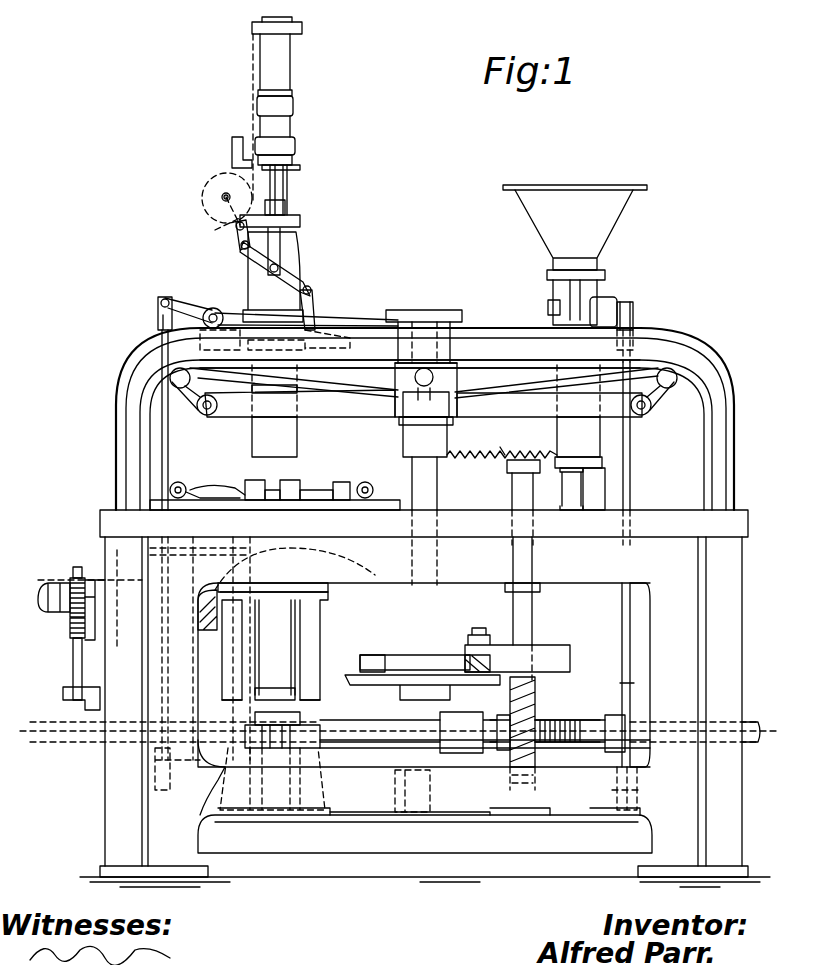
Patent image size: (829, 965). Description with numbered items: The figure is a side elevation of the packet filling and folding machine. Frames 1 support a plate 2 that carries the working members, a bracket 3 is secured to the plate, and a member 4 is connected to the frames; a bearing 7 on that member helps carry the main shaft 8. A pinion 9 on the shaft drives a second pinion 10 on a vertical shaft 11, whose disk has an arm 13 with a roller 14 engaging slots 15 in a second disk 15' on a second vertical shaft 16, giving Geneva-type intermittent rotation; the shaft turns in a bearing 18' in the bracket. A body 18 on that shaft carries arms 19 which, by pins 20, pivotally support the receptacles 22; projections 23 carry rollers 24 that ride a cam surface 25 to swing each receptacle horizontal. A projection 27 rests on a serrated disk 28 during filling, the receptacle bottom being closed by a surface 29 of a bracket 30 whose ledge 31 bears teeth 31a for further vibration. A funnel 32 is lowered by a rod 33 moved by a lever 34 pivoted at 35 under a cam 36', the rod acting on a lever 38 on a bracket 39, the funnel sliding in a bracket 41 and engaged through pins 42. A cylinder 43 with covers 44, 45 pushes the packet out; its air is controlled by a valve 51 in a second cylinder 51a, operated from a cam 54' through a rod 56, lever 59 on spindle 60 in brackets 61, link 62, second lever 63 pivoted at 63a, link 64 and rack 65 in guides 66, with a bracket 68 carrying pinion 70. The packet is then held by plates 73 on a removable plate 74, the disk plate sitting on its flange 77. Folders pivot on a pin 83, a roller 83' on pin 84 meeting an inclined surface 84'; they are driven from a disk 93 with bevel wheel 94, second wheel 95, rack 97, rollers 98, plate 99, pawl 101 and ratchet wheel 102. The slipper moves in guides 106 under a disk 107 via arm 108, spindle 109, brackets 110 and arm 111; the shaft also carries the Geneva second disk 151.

The frames 1 is at (425, 712).
The plate 2 is at (424, 523).
The bracket 3 is at (437, 419).
The member 4 is at (425, 830).
The bearing 7 is at (452, 762).
The shaft 8 is at (400, 731).
The pinion 9 is at (536, 706).
The second pinion 10 is at (560, 724).
The vertical shaft 11 is at (525, 629).
The arm 13 is at (500, 646).
The roller 14 is at (477, 662).
The recesses or slots 15 is at (372, 662).
The second disk 15' is at (422, 688).
The second vertical shaft 16 is at (424, 521).
The body 18 is at (424, 353).
The bearing 18' is at (402, 432).
The arms 19 is at (300, 403).
The pins 20 is at (457, 405).
The receptacles 22 is at (427, 416).
The projections 23 is at (415, 385).
The rollers 24 is at (170, 378).
The cam surface 25 is at (270, 388).
The projection 27 is at (546, 455).
The serrated disk 28 is at (510, 466).
The surface 29 is at (599, 489).
The bracket 30 is at (567, 489).
The ledge or wall 31 is at (502, 466).
The teeth or serrations 31a is at (505, 441).
The funnel 32 is at (575, 227).
The rod 33 is at (630, 492).
The lever 34 is at (688, 766).
The pivot 35 is at (620, 800).
The cam 36' is at (642, 675).
The lever 38 is at (548, 310).
The bracket 39 is at (603, 312).
The bracket 41 is at (595, 290).
The pins 42 is at (548, 303).
The cylinder 43 is at (272, 117).
The cover 44 is at (302, 28).
The second cover 45 is at (300, 221).
The valve 51 is at (273, 277).
The second cylinder 51a is at (275, 130).
The cam 54' is at (176, 774).
The rod 56 is at (166, 455).
The lever 59 is at (196, 298).
The spindle 60 is at (214, 308).
The brackets 61 is at (285, 331).
The link 62 is at (282, 178).
The second lever 63 is at (290, 272).
The pivot 63a is at (278, 268).
The link 64 is at (236, 240).
The toothed rack 65 is at (213, 223).
The guides 66 is at (232, 160).
The bracket 68 is at (222, 200).
The pinion 70 is at (202, 192).
The plates 73 is at (275, 647).
The plate 74 is at (268, 690).
The peripheral flange 77 is at (410, 828).
The pin 83 is at (215, 480).
The roller 83' is at (287, 480).
The pin 84 is at (275, 486).
The inclined surface 84' is at (262, 481).
The disk 93 is at (368, 555).
The bevel wheel 94 is at (330, 592).
The second wheel 95 is at (210, 614).
The rack 97 is at (72, 660).
The rollers 98 is at (70, 645).
The plate 99 is at (97, 580).
The pawl 101 is at (68, 628).
The ratchet wheel 102 is at (62, 582).
The guides 106 is at (310, 637).
The disk 107 is at (212, 770).
The arm 108 is at (215, 790).
The spindle 109 is at (300, 752).
The brackets 110 is at (300, 724).
The arm 111 is at (272, 767).
The second disk 151 is at (415, 651).